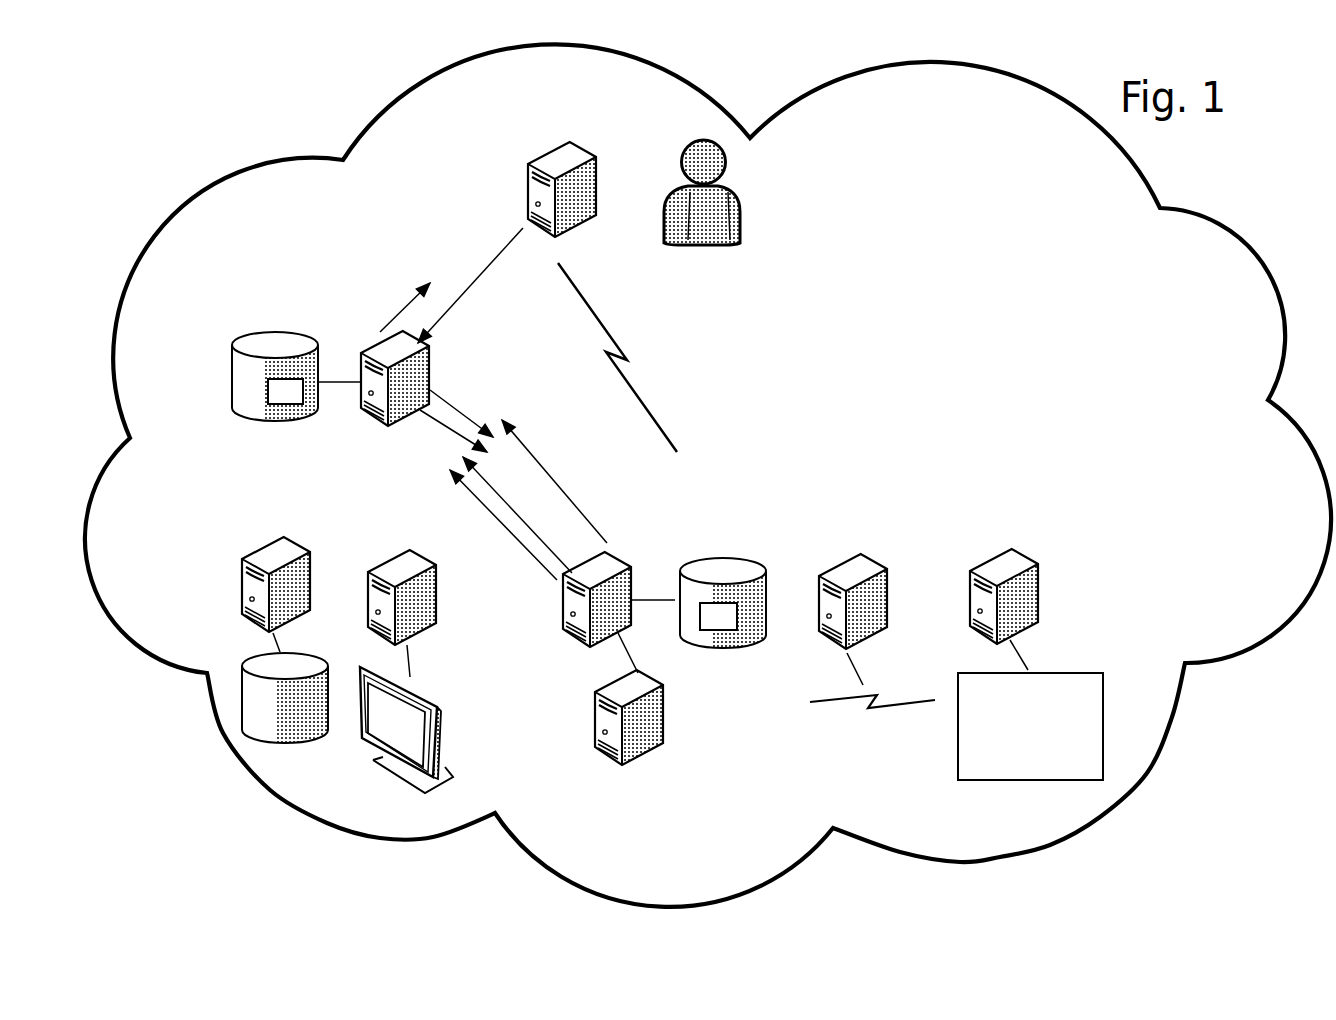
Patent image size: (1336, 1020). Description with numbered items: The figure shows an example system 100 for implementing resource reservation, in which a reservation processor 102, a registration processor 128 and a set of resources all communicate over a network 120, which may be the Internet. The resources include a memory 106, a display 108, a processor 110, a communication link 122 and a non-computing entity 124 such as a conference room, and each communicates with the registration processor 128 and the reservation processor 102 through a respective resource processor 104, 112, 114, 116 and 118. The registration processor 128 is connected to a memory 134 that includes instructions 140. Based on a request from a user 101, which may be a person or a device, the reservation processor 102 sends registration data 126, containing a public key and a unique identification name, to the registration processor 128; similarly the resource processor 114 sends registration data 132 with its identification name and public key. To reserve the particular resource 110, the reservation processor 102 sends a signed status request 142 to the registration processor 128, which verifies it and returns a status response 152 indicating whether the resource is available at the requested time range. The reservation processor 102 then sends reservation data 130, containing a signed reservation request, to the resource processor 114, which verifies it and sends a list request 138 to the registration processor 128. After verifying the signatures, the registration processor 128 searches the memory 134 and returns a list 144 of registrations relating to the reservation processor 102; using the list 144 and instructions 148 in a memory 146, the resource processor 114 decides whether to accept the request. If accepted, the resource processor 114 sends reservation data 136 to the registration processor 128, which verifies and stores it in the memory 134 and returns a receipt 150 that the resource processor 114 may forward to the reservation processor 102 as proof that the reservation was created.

The system 100 is at (1192, 866).
The user 101 is at (743, 208).
The reservation processor 102 is at (598, 167).
The resource processor 104 is at (240, 578).
The memory 106 is at (317, 742).
The display 108 is at (448, 782).
The processor 110 is at (648, 755).
The resource processor 112 is at (362, 592).
The resource processor 114 is at (630, 592).
The resource processor 116 is at (890, 585).
The resource processor 118 is at (1038, 580).
The network 120 is at (1008, 289).
The communication link 122 is at (873, 718).
The non-computing entity 124 is at (1103, 727).
The registration data 126 is at (472, 258).
The registration processor 128 is at (432, 382).
The reservation data 130 is at (631, 310).
The registration data 132 is at (572, 480).
The memory 134 is at (265, 345).
The reservation data 136 is at (480, 513).
The list request 138 is at (520, 490).
The instructions 140 is at (282, 403).
The status request 142 is at (483, 310).
The list 144 is at (460, 405).
The memory 146 is at (747, 570).
The instructions 148 is at (723, 625).
The receipt 150 is at (450, 443).
The status response 152 is at (398, 302).